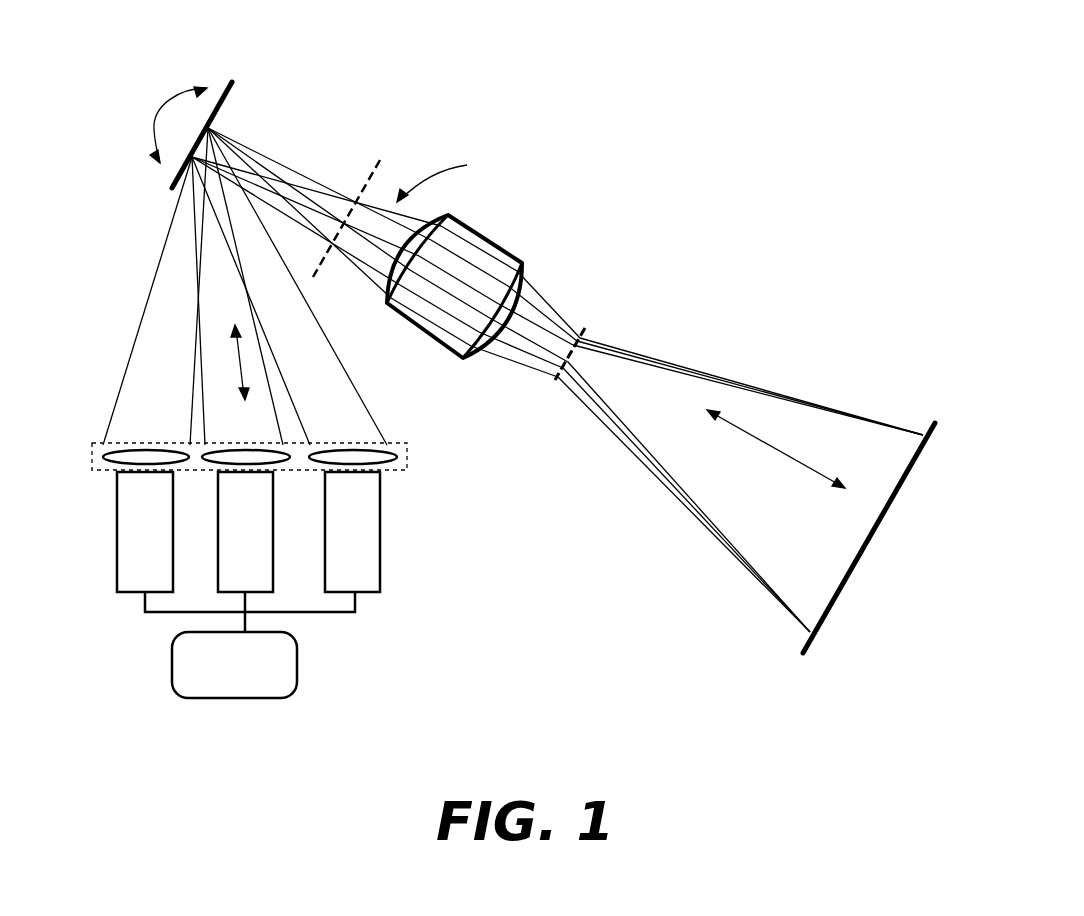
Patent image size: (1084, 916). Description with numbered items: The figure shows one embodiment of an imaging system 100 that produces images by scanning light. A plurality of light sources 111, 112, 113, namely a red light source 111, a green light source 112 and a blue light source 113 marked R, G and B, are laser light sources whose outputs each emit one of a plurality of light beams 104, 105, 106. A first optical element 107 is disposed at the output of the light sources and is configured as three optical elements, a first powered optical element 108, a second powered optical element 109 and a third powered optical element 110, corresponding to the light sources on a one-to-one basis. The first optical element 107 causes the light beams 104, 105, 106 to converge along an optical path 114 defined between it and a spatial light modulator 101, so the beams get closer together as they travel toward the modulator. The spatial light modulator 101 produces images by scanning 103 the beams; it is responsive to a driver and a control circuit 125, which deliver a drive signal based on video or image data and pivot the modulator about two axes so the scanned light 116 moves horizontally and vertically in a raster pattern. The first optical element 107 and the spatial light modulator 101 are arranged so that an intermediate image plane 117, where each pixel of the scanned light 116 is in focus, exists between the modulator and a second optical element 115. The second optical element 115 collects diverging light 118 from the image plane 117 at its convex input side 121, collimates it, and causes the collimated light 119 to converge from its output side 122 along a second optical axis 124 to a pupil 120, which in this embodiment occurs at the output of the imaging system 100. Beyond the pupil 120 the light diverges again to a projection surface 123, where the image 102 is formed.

The imaging system 100 is at (680, 234).
The spatial light modulator 101 is at (229, 79).
The image 102 is at (826, 575).
The scanning 103 is at (172, 90).
The light beam 104 is at (139, 330).
The light beam 105 is at (202, 233).
The light beam 106 is at (316, 320).
The first optical element 107 is at (407, 460).
The first powered optical element 108 is at (106, 455).
The second powered optical element 109 is at (245, 458).
The third powered optical element 110 is at (259, 463).
The red light source 111 is at (127, 557).
The green light source 112 is at (243, 580).
The blue light source 113 is at (370, 550).
The optical path 114 is at (243, 377).
The second optical element 115 is at (472, 301).
The scanned light 116 is at (262, 125).
The intermediate image plane 117 is at (380, 160).
The diverging light 118 is at (448, 178).
The collimated light 119 is at (562, 295).
The pupil 120 is at (552, 383).
The input side 121 is at (387, 305).
The output side 122 is at (525, 267).
The projection surface 123 is at (868, 552).
The second optical axis 124 is at (768, 443).
The control circuit 125 is at (233, 698).